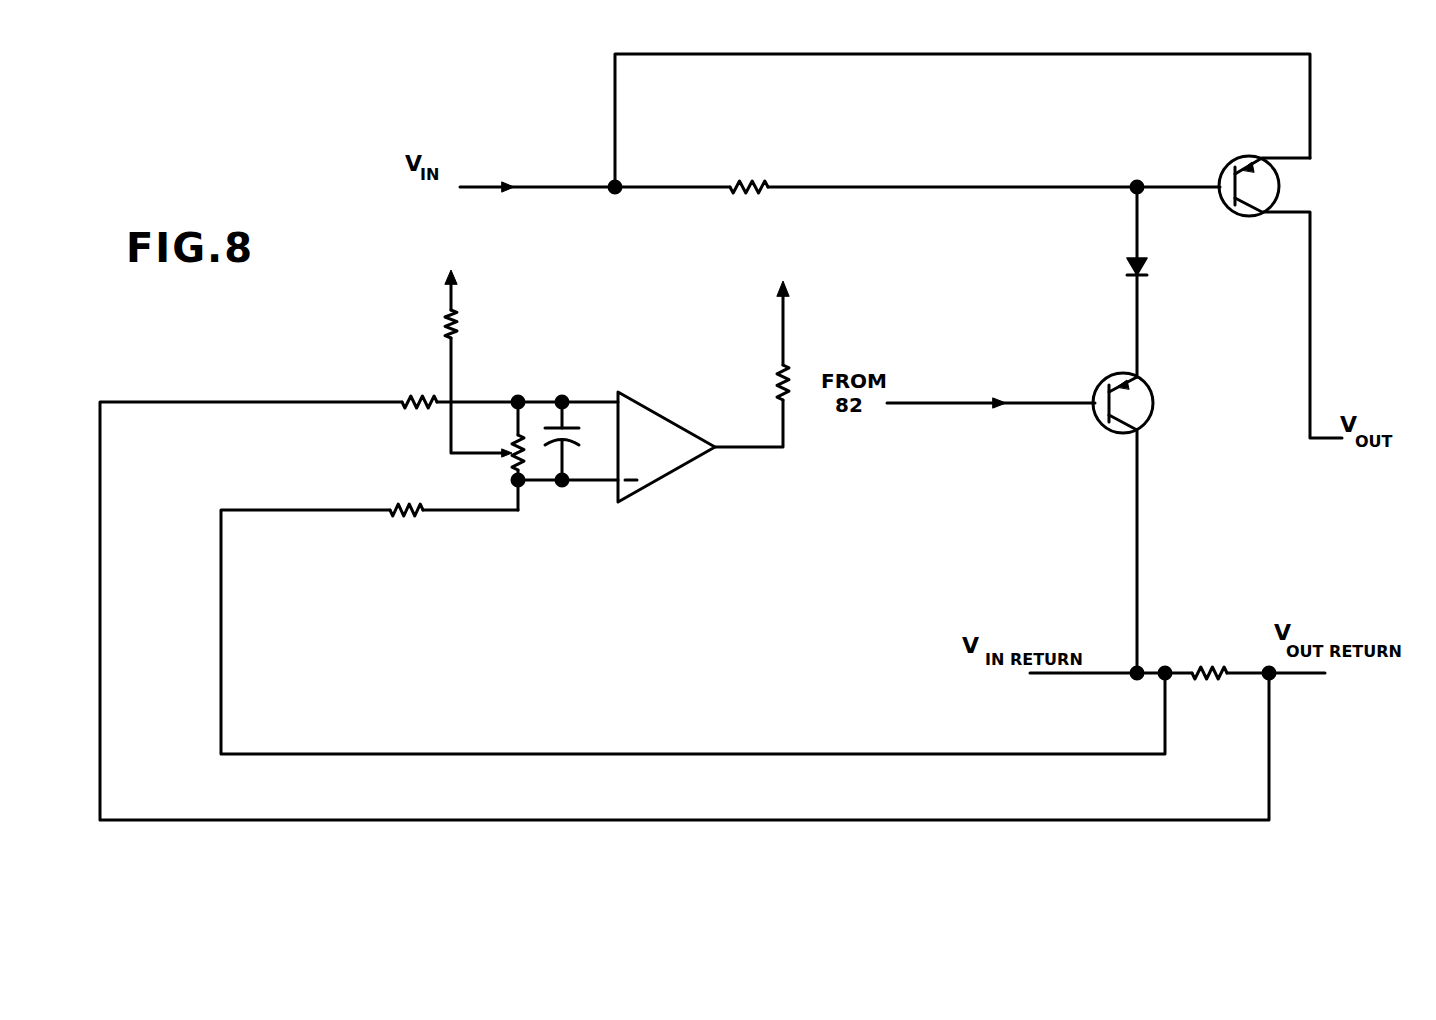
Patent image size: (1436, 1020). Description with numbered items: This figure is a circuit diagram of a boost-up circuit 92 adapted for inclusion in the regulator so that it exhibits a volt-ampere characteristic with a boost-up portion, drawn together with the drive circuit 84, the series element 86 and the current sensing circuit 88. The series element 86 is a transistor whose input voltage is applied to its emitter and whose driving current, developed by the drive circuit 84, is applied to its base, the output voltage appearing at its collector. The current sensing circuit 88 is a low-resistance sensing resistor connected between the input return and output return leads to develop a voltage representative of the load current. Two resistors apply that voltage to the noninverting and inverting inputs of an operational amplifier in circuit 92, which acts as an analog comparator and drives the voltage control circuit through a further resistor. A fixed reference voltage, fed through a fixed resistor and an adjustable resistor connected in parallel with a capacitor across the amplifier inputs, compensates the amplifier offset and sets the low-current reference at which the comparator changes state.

The drive circuit 84 is at (1198, 418).
The series element 86 is at (1358, 190).
The current sensing circuit 88 is at (1235, 740).
The circuit 92 is at (652, 579).